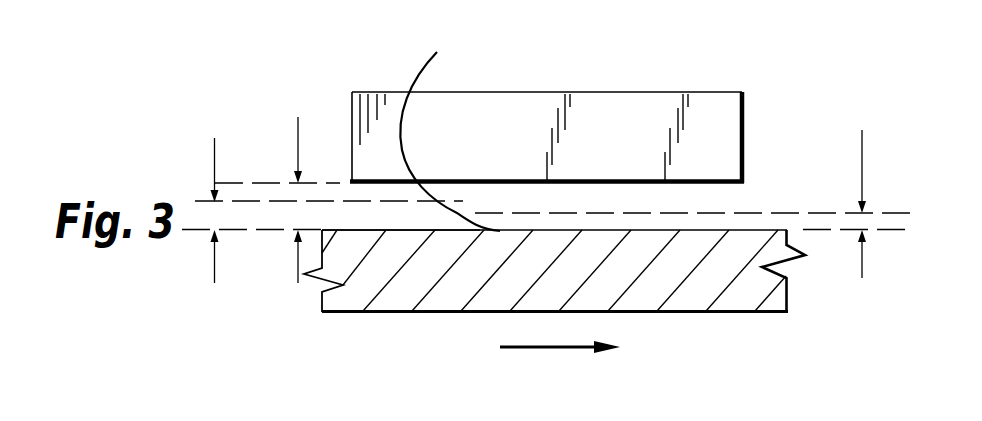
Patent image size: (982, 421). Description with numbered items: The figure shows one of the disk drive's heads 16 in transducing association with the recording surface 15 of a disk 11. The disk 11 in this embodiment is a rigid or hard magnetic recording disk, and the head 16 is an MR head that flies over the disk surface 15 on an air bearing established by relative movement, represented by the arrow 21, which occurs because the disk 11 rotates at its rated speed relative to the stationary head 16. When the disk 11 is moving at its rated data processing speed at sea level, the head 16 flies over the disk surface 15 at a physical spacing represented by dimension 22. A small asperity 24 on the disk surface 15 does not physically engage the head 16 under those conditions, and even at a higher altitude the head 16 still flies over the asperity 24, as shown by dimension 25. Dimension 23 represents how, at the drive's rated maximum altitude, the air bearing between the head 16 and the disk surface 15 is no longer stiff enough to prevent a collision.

The disk 11 is at (668, 287).
The recording surface 15 is at (402, 232).
The head 16 is at (607, 125).
The arrow 21 is at (540, 347).
The dimension 22 is at (298, 133).
The dimension 23 is at (862, 266).
The asperity 24 is at (450, 124).
The dimension 25 is at (213, 158).